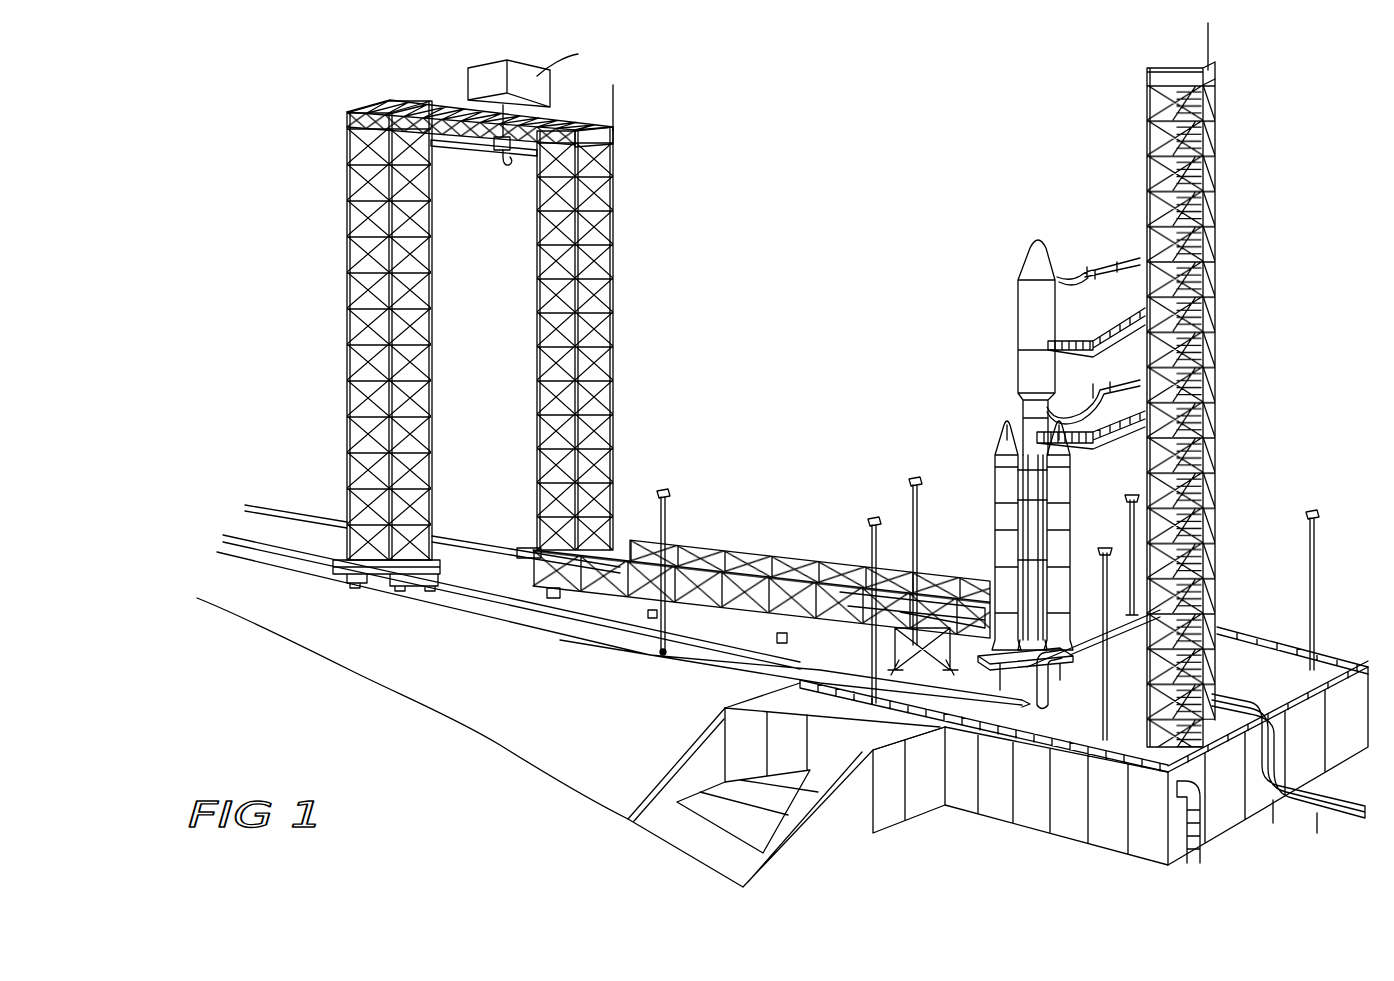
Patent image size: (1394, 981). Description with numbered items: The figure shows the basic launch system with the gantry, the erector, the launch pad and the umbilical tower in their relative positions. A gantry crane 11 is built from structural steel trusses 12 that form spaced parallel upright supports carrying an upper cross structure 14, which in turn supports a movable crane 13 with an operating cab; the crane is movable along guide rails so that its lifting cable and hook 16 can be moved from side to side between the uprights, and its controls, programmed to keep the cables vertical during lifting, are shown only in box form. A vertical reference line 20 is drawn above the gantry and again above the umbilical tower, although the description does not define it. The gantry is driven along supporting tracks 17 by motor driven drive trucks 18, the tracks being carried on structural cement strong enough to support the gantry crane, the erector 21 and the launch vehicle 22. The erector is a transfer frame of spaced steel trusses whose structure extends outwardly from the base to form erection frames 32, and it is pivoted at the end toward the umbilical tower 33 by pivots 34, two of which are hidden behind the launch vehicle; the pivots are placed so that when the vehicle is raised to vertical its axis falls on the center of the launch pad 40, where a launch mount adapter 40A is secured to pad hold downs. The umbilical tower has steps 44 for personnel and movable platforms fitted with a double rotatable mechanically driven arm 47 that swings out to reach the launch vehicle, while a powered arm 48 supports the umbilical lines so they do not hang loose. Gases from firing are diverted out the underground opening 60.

The gantry crane 11 is at (464, 294).
The structural steel trusses 12 is at (347, 418).
The movable crane 13 is at (494, 149).
The upper cross structure 14 is at (431, 103).
The lifting cable and hook 16 is at (503, 163).
The supporting tracks 17 is at (460, 588).
The motor driven drive trucks 18 is at (403, 589).
The vertical reference line 20 is at (616, 95).
The erector 21 is at (748, 562).
The launch vehicle 22 is at (991, 520).
The erection frames 32 is at (814, 560).
The umbilical tower 33 is at (1216, 498).
The pivots 34 is at (948, 657).
The launch pad 40 is at (1270, 692).
The launch mount adapter 40A is at (1060, 668).
The steps 44 is at (1214, 258).
The double rotatable mechanically driven arm 47 is at (1067, 352).
The umbilical support arm 48 is at (1094, 266).
The underground opening 60 is at (754, 828).